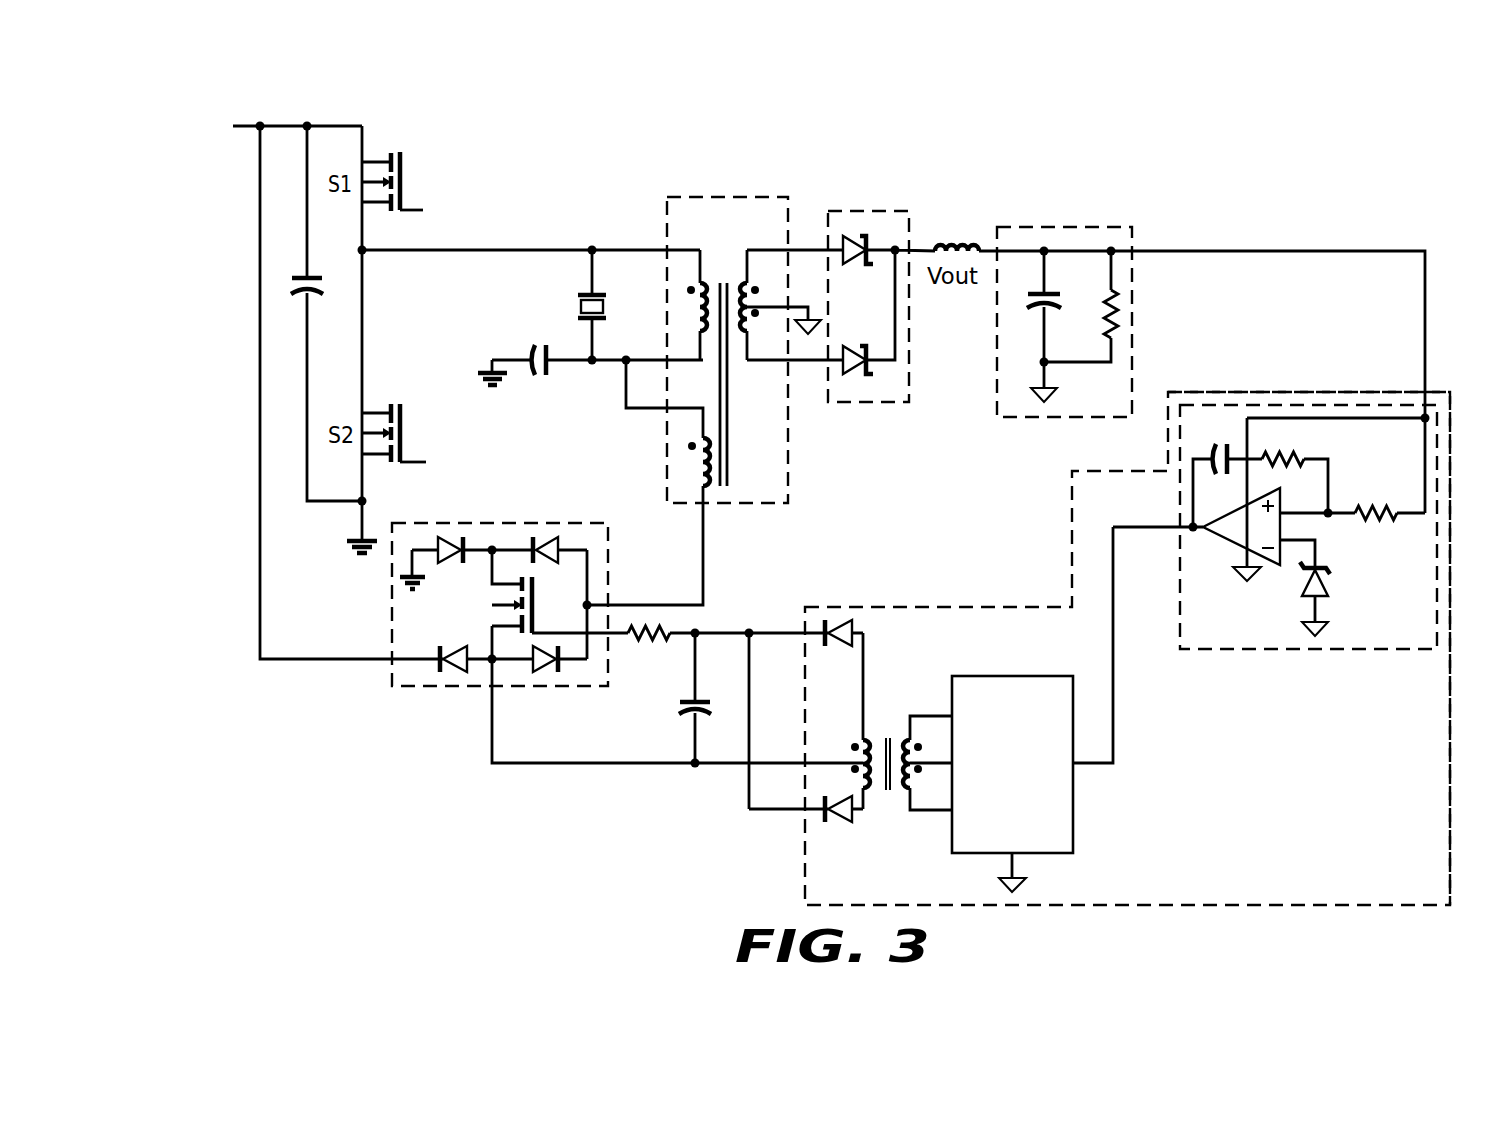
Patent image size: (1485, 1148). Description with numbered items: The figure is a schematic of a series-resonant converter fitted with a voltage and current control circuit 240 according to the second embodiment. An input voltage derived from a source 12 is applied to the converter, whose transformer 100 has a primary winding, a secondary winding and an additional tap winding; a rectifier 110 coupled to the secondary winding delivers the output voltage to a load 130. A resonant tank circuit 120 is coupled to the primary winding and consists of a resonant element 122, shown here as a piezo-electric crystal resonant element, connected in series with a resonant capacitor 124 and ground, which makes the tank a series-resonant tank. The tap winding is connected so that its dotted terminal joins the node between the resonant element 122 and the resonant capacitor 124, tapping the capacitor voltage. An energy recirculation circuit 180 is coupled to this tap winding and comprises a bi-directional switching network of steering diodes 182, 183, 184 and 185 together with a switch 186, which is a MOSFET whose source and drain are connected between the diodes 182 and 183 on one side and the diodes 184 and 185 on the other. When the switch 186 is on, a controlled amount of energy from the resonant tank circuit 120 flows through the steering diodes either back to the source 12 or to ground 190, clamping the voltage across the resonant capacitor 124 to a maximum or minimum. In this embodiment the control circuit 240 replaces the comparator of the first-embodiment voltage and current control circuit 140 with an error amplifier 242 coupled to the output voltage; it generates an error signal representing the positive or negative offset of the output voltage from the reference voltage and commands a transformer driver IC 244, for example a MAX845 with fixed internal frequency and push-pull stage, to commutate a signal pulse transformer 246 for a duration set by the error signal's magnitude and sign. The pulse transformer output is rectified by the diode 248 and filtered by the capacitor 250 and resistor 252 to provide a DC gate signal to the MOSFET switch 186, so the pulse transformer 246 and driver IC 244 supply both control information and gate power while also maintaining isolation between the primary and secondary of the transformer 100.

The source 12 is at (222, 140).
The transformer 100 is at (694, 196).
The rectifier 110 is at (856, 403).
The resonant tank circuit 120 is at (483, 240).
The resonant element 122 is at (575, 305).
The resonant capacitor 124 is at (543, 380).
The load 130 is at (1050, 227).
The voltage and current control circuit 140 is at (1237, 391).
The energy recirculation circuit 180 is at (415, 686).
The steering diode 182 is at (450, 540).
The steering diode 183 is at (543, 540).
The steering diode 184 is at (466, 678).
The steering diode 185 is at (546, 678).
The switch 186 is at (484, 612).
The ground 190 is at (393, 568).
The voltage and current control circuit 240 is at (952, 607).
The error amplifier 242 is at (1318, 650).
The transformer driver integrated circuit 244 is at (992, 676).
The signal pulse transformer 246 is at (886, 800).
The diode 248 is at (838, 825).
The capacitor 250 is at (690, 718).
The resistor 252 is at (646, 649).